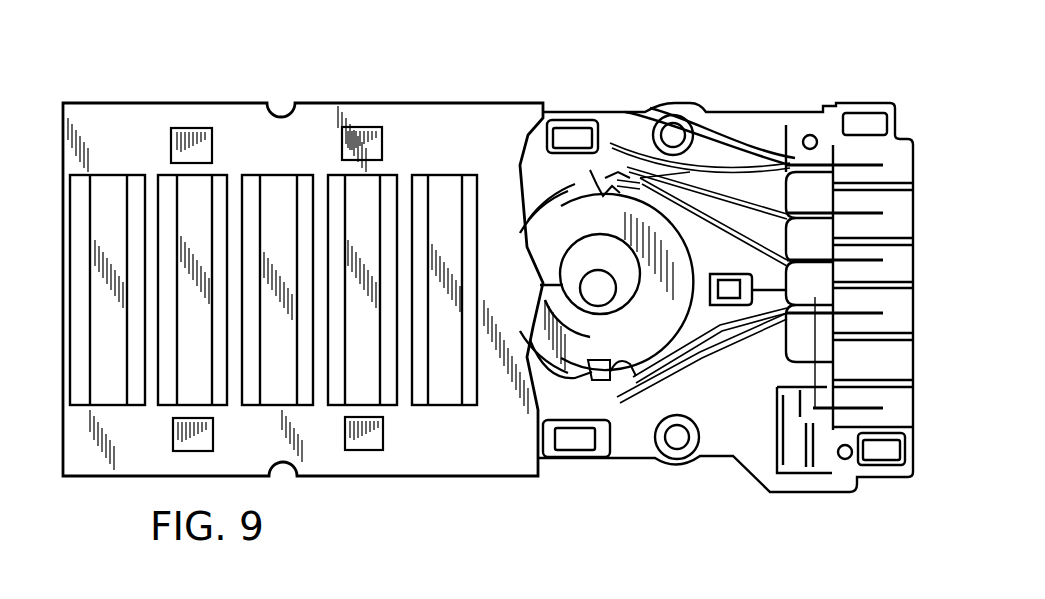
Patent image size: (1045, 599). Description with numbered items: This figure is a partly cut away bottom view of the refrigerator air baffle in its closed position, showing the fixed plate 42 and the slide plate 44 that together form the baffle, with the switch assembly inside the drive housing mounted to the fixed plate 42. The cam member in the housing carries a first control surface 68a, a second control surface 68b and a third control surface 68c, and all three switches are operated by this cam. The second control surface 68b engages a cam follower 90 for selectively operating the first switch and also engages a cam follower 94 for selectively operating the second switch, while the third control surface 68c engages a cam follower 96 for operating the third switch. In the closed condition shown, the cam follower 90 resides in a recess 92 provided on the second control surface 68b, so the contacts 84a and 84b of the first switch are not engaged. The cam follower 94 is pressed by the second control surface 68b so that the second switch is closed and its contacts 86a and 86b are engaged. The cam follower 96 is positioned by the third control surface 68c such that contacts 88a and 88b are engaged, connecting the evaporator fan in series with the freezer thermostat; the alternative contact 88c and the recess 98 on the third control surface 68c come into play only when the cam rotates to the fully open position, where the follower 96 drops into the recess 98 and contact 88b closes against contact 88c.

The fixed plate 42 is at (303, 125).
The slide plate 44 is at (111, 185).
The first control surface 68a is at (527, 240).
The second control surface 68b is at (553, 245).
The third control surface 68c is at (563, 218).
The cam follower 96 is at (600, 170).
The cam follower 94 is at (612, 172).
The contact 88a is at (630, 165).
The contact 88b is at (693, 172).
The contact 88c is at (720, 176).
The contact 86a is at (723, 170).
The contact 86b is at (768, 168).
The contact 84a is at (627, 395).
The contact 84b is at (653, 392).
The recess 98 is at (560, 375).
The recess 92 is at (592, 372).
The cam follower 90 is at (613, 375).